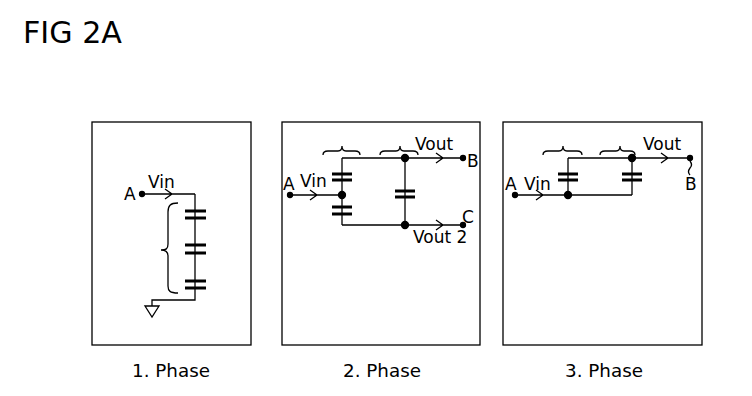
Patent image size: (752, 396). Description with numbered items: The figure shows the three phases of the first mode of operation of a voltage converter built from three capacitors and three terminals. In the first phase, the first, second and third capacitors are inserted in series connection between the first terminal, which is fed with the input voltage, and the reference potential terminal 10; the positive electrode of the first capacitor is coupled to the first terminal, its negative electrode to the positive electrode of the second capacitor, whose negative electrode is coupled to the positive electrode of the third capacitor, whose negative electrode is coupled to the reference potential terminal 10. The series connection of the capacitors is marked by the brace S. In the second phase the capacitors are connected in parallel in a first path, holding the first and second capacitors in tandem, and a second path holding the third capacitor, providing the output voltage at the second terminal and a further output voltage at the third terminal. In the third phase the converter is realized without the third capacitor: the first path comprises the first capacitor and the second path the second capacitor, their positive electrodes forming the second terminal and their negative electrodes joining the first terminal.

The reference potential terminal 10 is at (153, 324).
The series capacitor stack S is at (159, 248).